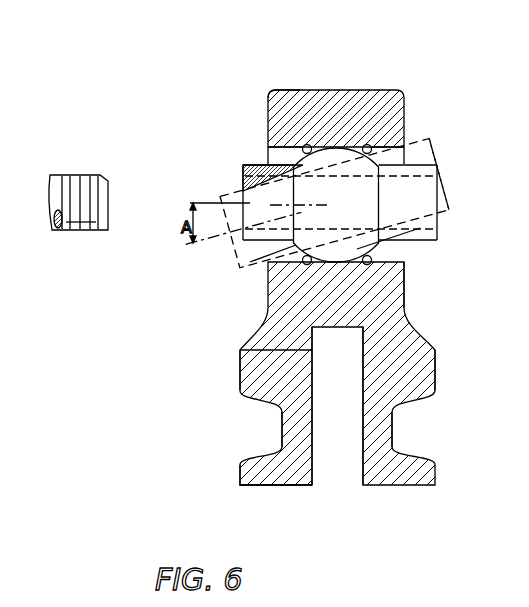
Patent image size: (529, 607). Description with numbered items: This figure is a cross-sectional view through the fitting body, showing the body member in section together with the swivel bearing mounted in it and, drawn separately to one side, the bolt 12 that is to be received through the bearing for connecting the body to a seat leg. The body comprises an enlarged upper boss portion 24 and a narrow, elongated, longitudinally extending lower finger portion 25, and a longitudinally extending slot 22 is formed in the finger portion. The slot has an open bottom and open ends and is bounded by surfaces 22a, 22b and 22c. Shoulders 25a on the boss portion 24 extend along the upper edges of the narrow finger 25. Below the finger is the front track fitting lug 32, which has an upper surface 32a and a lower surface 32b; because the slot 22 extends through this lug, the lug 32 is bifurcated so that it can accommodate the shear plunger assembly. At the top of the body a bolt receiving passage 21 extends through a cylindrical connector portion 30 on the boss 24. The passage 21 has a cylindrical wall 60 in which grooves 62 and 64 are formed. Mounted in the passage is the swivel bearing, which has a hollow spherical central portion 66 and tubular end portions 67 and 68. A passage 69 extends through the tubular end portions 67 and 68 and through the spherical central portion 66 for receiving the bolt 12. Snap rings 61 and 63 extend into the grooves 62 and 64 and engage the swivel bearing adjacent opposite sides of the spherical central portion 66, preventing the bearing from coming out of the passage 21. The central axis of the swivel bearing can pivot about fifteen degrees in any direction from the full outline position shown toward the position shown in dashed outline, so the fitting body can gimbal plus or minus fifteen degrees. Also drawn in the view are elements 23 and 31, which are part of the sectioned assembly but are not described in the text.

The bolt 12 is at (78, 182).
The bolt receiving passage 21 is at (403, 255).
The slot 22 is at (345, 441).
The slot surface 22a is at (240, 350).
The slot surface 22b is at (313, 467).
The slot surface 22c is at (362, 475).
The sleeve 23 is at (437, 228).
The upper boss portion 24 is at (280, 90).
The lower finger portion 25 is at (390, 422).
The shoulders 25a is at (240, 389).
The cylindrical connector portion 30 is at (353, 90).
The pin 31 is at (200, 203).
The front track fitting lug 32 is at (240, 465).
The upper surface 32a is at (265, 453).
The lower surface 32b is at (263, 487).
The cylindrical wall 60 is at (266, 150).
The snap ring 61 is at (300, 265).
The groove 62 is at (303, 146).
The snap ring 63 is at (375, 268).
The groove 64 is at (387, 130).
The hollow spherical central portion 66 is at (330, 157).
The tubular end portion 67 is at (262, 251).
The tubular end portion 68 is at (428, 181).
The passage 69 is at (240, 182).